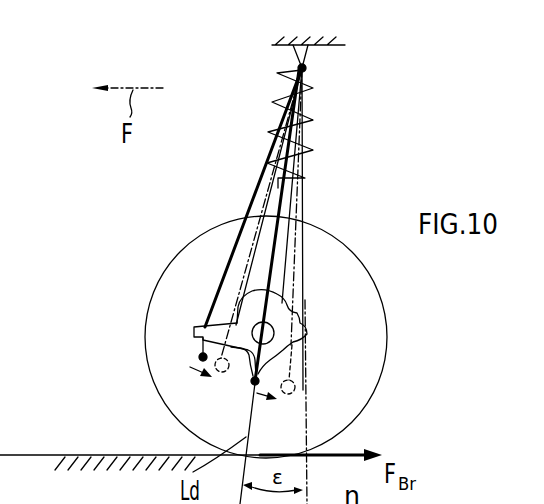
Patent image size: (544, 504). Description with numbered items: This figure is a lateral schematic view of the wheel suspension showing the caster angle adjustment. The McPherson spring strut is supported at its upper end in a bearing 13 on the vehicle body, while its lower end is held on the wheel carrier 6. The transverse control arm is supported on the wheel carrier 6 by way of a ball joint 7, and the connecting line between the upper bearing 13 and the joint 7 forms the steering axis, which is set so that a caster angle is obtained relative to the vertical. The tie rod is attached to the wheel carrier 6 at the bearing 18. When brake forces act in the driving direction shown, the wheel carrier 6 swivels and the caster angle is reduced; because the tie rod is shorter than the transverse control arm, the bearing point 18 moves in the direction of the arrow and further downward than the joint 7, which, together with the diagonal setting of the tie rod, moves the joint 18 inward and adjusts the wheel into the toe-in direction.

The bearing 13 is at (307, 66).
The wheel carrier 6 is at (288, 316).
The ball joint 7 is at (252, 384).
The bearing 18 is at (201, 356).